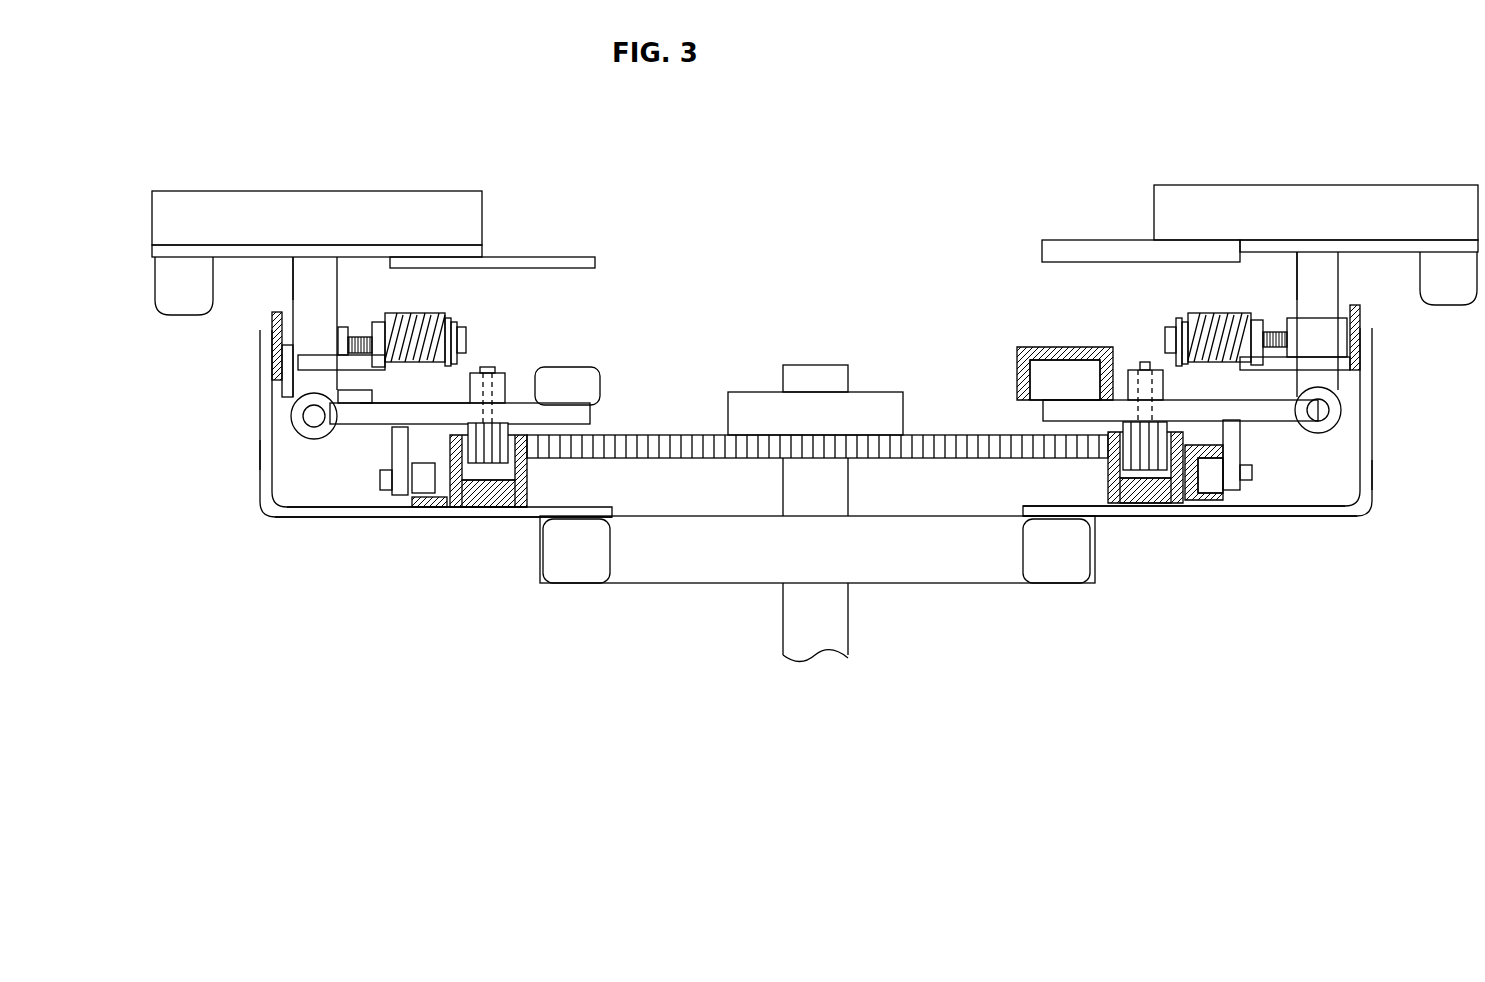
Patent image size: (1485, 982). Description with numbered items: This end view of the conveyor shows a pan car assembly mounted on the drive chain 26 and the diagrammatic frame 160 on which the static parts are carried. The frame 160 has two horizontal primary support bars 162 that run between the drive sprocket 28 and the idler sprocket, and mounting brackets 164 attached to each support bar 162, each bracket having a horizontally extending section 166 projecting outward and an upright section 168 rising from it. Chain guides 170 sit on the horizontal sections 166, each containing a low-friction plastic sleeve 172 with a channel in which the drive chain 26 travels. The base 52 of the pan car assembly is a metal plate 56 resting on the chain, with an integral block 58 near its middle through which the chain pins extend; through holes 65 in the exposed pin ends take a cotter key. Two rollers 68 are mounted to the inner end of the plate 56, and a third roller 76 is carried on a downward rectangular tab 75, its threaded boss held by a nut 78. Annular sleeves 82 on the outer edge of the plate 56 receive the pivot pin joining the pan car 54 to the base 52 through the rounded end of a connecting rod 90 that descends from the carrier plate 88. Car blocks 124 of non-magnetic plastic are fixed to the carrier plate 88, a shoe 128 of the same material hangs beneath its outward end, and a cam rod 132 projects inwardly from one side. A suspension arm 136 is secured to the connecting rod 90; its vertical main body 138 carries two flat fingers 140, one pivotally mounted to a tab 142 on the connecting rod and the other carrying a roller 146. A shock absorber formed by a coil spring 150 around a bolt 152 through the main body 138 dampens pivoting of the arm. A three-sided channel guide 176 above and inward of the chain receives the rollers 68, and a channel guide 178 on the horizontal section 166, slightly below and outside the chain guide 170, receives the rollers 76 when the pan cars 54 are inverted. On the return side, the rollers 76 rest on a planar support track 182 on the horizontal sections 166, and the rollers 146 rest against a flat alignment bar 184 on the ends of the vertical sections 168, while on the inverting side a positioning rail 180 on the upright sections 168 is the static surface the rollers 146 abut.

The car block 124 is at (362, 229).
The cam rod 132 is at (588, 260).
The shoe 128 is at (192, 297).
The carrier plate 88 is at (238, 260).
The pan car 54 is at (1275, 247).
The connecting rod 90 is at (326, 297).
The mounting bracket 164 is at (280, 522).
The horizontally extending section 166 is at (335, 520).
The upright section 168 is at (268, 435).
The alignment bar 184 is at (272, 330).
The positioning rail 180 is at (1360, 318).
The roller 146 is at (278, 358).
The finger 140 is at (320, 362).
The tab 142 is at (318, 375).
The suspension arm 136 is at (375, 335).
The bolt 152 is at (466, 340).
The coil spring 150 is at (1205, 312).
The main body 138 is at (1257, 362).
The annular sleeve 82 is at (305, 432).
The base 52 is at (1255, 418).
The plate 56 is at (462, 393).
The through hole 65 is at (488, 372).
The block 58 is at (1138, 365).
The tab 75 is at (392, 453).
The nut 78 is at (382, 483).
The roller 76 is at (425, 472).
The support track 182 is at (422, 510).
The channel guide 178 is at (1218, 510).
The chain guide 170 is at (530, 470).
The sleeve 172 is at (496, 510).
The drive chain 26 is at (1135, 445).
The drive sprocket 28 is at (637, 440).
The frame 160 is at (1106, 567).
The primary support bar 162 is at (573, 575).
The channel guide 176 is at (1017, 372).
The roller 68 is at (1082, 394).